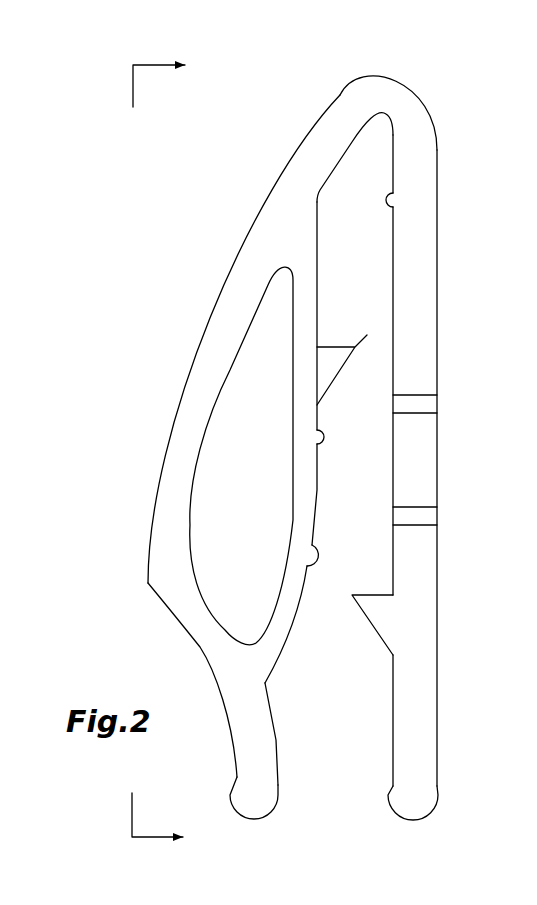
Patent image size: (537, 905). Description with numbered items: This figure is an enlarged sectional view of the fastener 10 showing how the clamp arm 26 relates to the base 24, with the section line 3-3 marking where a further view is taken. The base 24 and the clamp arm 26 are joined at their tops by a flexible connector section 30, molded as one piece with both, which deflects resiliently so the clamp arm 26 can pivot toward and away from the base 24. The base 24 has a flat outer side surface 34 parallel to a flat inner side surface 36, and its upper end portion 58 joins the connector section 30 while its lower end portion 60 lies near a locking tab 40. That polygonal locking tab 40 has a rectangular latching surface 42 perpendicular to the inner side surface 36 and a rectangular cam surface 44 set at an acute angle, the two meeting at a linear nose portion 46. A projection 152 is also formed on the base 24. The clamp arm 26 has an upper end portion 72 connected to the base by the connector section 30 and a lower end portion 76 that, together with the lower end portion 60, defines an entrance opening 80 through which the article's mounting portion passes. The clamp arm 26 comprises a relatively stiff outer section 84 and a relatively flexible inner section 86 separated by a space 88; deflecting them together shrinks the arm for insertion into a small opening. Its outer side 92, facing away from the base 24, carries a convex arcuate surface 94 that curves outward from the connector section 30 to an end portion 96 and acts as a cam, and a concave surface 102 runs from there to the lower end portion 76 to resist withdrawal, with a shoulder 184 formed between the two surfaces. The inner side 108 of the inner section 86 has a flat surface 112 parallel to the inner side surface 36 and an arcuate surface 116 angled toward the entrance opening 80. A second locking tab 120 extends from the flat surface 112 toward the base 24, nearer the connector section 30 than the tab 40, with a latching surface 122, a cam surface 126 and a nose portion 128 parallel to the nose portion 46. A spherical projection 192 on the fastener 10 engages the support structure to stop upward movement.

The section line 3- 3 is at (168, 450).
The fastener 10 is at (142, 248).
The base 24 is at (443, 805).
The clamp arm 26 is at (242, 815).
The connector section 30 is at (412, 90).
The outer side surface 34 is at (437, 265).
The inner side surface 36 is at (393, 210).
The locking tab 40 is at (382, 612).
The latching surface 42 is at (373, 595).
The cam surface 44 is at (370, 622).
The nose portion 46 is at (352, 595).
The upper end portion 58 is at (413, 180).
The lower end portion 60 is at (413, 730).
The upper end portion 72 is at (304, 147).
The lower end portion 76 is at (257, 740).
The entrance opening 80 is at (328, 788).
The outer section 84 is at (180, 480).
The inner section 86 is at (308, 510).
The space 88 is at (241, 456).
The outer side 92 is at (240, 248).
The arcuate surface 94 is at (207, 317).
The end portion 96 is at (148, 583).
The concave surface 102 is at (202, 647).
The inner side 108 is at (320, 268).
The flat surface 112 is at (315, 441).
The arcuate surface 116 is at (307, 563).
The locking tab 120 is at (327, 366).
The latching surface 122 is at (338, 343).
The cam surface 126 is at (337, 380).
The nose portion 128 is at (367, 335).
The projection 152 is at (423, 462).
The shoulder 184 is at (173, 587).
The spherical projection 192 is at (228, 797).